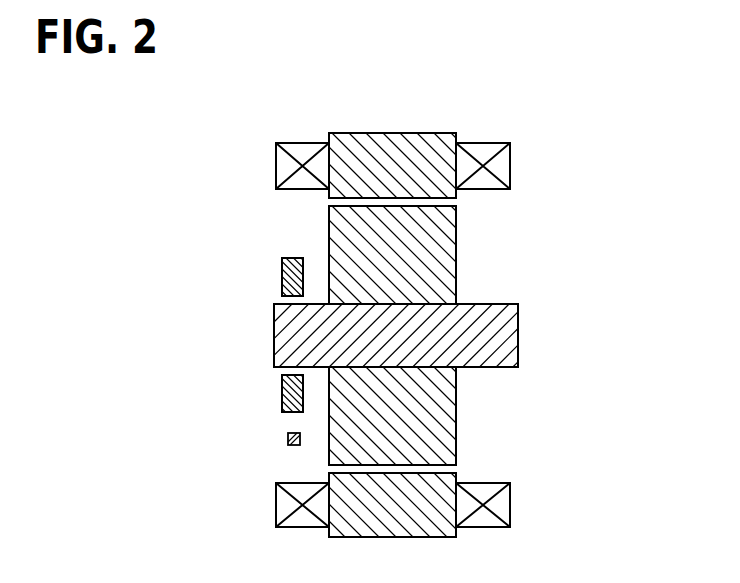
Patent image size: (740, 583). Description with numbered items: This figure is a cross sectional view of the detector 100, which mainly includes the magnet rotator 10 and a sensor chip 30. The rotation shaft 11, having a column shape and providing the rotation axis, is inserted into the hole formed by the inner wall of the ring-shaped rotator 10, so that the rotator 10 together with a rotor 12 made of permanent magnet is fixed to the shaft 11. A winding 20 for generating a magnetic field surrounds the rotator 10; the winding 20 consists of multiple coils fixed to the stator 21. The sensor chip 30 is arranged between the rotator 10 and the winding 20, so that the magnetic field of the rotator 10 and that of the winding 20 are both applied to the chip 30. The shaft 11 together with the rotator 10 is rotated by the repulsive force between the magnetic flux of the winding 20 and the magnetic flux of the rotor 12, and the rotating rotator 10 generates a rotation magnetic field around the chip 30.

The detector 100 is at (640, 66).
The stator 21 is at (456, 134).
The winding 20 is at (510, 172).
The rotor 12 is at (329, 220).
The rotation shaft 11 is at (274, 317).
The magnet rotator 10 is at (282, 272).
The sensor chip 30 is at (280, 441).